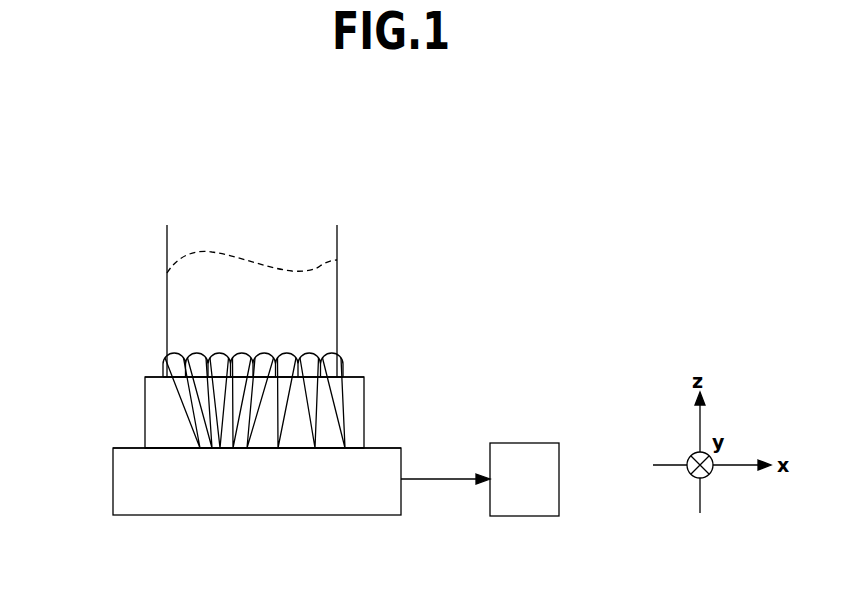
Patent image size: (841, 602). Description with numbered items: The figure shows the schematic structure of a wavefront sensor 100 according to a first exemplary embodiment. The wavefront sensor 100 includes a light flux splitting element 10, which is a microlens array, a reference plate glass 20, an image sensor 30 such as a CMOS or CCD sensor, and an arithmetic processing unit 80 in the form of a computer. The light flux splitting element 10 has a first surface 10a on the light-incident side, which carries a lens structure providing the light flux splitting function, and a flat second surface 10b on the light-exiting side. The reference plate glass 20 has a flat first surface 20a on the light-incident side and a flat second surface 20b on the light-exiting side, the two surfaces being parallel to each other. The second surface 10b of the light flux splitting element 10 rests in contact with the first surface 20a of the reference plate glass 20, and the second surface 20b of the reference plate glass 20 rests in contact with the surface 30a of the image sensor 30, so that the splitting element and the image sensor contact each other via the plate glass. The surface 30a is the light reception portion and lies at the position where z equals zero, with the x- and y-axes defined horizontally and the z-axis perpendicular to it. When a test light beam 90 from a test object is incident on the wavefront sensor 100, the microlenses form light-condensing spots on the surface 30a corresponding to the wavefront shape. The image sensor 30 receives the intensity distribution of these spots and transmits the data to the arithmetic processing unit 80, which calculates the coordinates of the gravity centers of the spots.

The wavefront sensor 100 is at (121, 206).
The light flux splitting element 10 is at (177, 357).
The first surface of light flux splitting element 10a is at (340, 351).
The second surface of light flux splitting element 10b is at (343, 366).
The reference plate glass 20 is at (353, 412).
The first surface of reference plate glass 20a is at (158, 377).
The second surface of reference plate glass 20b is at (163, 447).
The image sensor 30 is at (123, 482).
The surface of image sensor 30a is at (295, 449).
The arithmetic processing unit 80 is at (525, 457).
The test light beam 90 is at (315, 270).